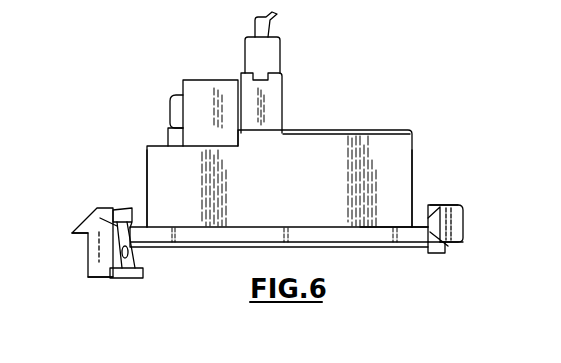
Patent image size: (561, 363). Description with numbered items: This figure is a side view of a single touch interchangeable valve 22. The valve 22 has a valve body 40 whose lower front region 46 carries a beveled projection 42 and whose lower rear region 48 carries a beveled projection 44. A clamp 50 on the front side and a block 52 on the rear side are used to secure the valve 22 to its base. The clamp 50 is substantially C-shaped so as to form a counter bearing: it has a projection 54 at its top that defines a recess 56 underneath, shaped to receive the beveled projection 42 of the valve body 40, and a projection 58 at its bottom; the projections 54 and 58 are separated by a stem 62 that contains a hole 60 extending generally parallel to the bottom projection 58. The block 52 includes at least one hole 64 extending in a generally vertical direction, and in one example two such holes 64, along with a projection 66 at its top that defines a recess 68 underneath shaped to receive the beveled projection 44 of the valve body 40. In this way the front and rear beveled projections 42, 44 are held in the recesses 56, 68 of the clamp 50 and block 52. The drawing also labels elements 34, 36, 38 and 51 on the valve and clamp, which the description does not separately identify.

The valve 22 is at (394, 75).
The relay block 34 is at (208, 93).
The side projection 36 is at (175, 110).
The fuse/terminal post 38 is at (278, 25).
The valve body 40 is at (395, 175).
The beveled projection 42 is at (143, 234).
The beveled projection 44 is at (418, 232).
The lower front region 46 is at (147, 177).
The lower rear region 48 is at (415, 175).
The clamp 50 is at (100, 225).
The clip notch 51 is at (72, 232).
The block 52 is at (457, 223).
The projection 54 is at (118, 213).
The recess 56 is at (132, 278).
The projection 58 is at (112, 278).
The hole 60 is at (127, 260).
The stem 62 is at (100, 250).
The hole 64 is at (450, 247).
The projection 66 is at (438, 203).
The recess 68 is at (448, 248).